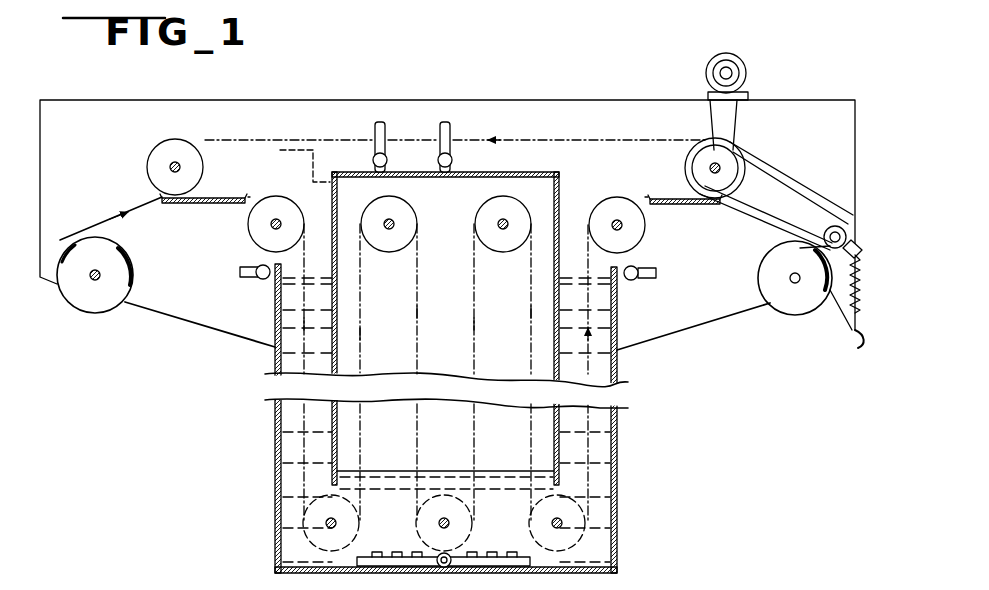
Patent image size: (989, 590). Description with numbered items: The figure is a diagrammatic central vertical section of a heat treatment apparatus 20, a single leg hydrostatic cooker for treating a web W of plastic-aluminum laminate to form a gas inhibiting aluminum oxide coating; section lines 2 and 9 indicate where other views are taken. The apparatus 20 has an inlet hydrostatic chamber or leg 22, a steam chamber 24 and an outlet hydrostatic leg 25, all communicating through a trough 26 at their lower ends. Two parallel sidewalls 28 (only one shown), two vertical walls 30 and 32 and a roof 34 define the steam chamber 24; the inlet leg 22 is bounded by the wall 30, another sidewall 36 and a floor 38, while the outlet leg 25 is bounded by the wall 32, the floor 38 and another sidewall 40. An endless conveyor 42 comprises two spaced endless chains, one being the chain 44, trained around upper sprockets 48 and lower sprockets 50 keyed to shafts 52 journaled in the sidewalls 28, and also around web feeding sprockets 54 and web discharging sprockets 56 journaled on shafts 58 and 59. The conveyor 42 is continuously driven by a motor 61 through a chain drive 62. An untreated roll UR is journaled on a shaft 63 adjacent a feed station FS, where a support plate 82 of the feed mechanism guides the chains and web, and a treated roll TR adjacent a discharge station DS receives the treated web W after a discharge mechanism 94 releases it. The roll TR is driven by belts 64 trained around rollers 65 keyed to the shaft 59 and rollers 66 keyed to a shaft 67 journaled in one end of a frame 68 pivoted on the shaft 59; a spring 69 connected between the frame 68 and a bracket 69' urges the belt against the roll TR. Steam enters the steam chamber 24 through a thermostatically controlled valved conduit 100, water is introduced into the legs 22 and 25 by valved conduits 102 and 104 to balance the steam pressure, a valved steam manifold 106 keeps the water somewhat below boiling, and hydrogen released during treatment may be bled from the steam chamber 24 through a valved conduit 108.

The heat treatment apparatus 20 is at (464, 90).
The inlet hydrostatic chamber 22 is at (285, 363).
The steam chamber 24 is at (514, 181).
The outlet hydrostatic leg 25 is at (605, 422).
The trough 26 is at (275, 548).
The sidewalls 28 is at (290, 127).
The vertical wall 30 is at (334, 303).
The vertical wall 32 is at (553, 310).
The roof 34 is at (483, 178).
The sidewall 36 is at (275, 436).
The floor 38 is at (616, 572).
The sidewall 40 is at (618, 443).
The endless conveyor 42 is at (557, 138).
The endless chain 44 is at (201, 139).
The upper sprockets 48 is at (263, 250).
The lower sprockets 50 is at (340, 494).
The shafts 52 is at (271, 224).
The web feeding sprockets 54 is at (203, 160).
The web discharging sprockets 56 is at (688, 162).
The shaft 58 is at (170, 167).
The shaft 59 is at (738, 163).
The motor 61 is at (733, 62).
The chain drive 62 is at (733, 130).
The shaft 63 is at (93, 277).
The belts 64 is at (796, 185).
The rollers 65 is at (700, 184).
The rollers 66 is at (830, 222).
The shaft 67 is at (851, 240).
The frame 68 is at (793, 222).
The spring 69 is at (833, 295).
The bracket 69' is at (843, 344).
The support plate 82 is at (208, 198).
The discharge mechanism 94 is at (790, 162).
The valved conduit 100 is at (378, 128).
The valved conduit 102 is at (240, 273).
The valved conduit 104 is at (641, 278).
The steam manifold 106 is at (412, 563).
The valved conduit 108 is at (450, 128).
The section line 2 is at (22, 82).
The section line 9 is at (688, 73).
The web W is at (114, 222).
The feed station FS is at (196, 208).
The untreated roll UR is at (100, 313).
The discharge station DS is at (727, 214).
The treated roll TR is at (790, 314).